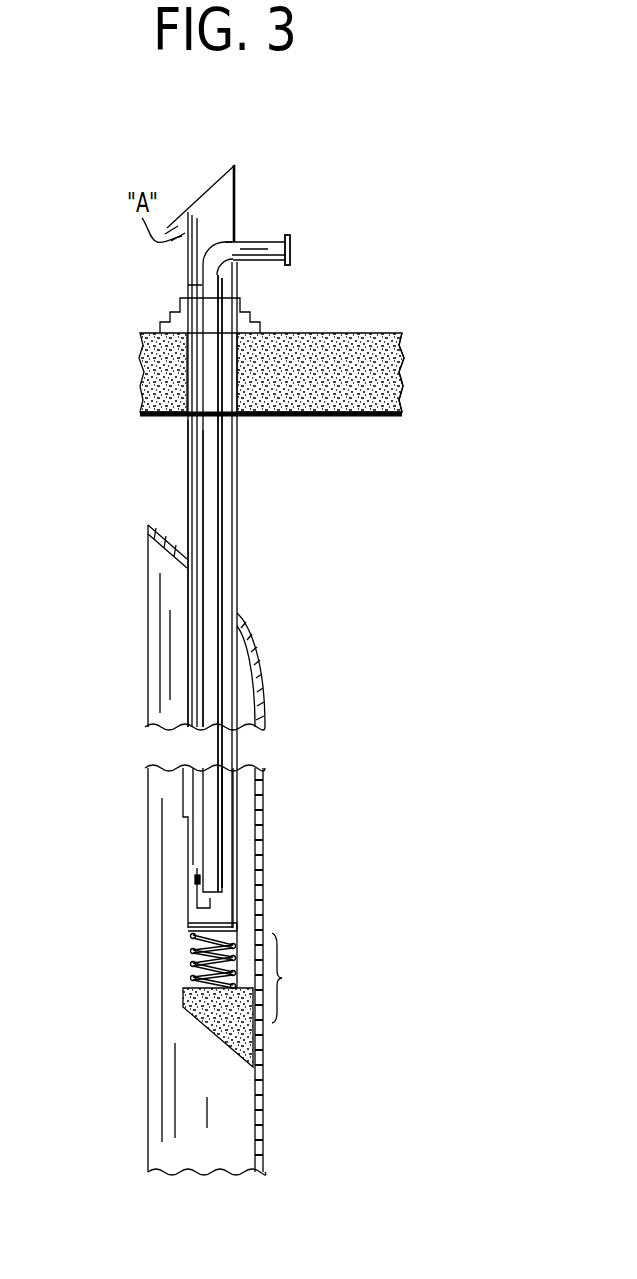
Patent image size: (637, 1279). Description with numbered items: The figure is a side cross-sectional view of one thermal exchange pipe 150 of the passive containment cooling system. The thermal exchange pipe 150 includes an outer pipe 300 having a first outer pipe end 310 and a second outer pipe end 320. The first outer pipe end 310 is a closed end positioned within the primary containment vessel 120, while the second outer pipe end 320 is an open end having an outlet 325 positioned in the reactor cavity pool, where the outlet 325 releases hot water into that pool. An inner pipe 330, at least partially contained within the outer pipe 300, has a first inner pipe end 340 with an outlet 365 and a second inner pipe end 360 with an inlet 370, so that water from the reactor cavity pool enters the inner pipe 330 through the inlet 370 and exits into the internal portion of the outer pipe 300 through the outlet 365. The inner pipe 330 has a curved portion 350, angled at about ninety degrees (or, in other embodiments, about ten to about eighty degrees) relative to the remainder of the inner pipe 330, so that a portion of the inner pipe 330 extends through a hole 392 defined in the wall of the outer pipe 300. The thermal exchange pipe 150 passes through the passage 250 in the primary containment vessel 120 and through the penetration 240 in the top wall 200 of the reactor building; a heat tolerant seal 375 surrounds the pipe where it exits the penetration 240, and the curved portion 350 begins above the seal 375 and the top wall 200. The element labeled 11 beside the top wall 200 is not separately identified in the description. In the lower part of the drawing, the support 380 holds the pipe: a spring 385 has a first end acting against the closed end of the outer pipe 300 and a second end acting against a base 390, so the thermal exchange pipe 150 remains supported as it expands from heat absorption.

The wall 11 is at (405, 390).
The primary containment vessel 120 is at (266, 705).
The thermal exchange pipe 150 is at (238, 505).
The top wall 200 is at (384, 335).
The penetration 240 is at (308, 353).
The passage 250 is at (240, 615).
The outer pipe 300 is at (188, 473).
The first outer pipe end 310 is at (188, 920).
The second outer pipe end 320 is at (188, 253).
The outlet 325 is at (231, 168).
The inner pipe 330 is at (203, 505).
The first inner pipe end 340 is at (223, 866).
The curved portion 350 is at (188, 285).
The second inner pipe end 360 is at (277, 243).
The outlet 365 is at (222, 893).
The inlet 370 is at (291, 250).
The seal 375 is at (247, 313).
The support 380 is at (283, 978).
The spring 385 is at (190, 962).
The base 390 is at (252, 1040).
The hole 392 is at (240, 232).